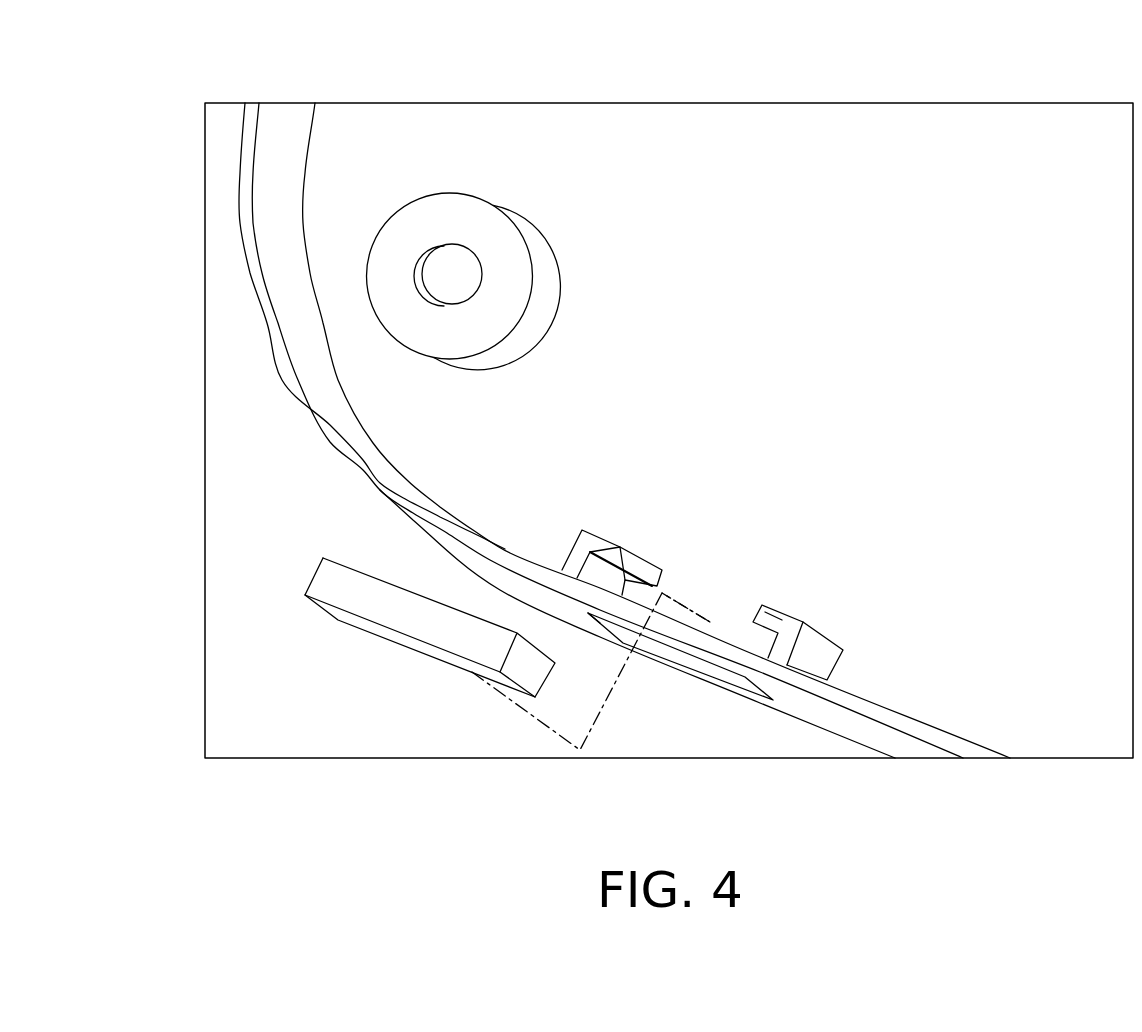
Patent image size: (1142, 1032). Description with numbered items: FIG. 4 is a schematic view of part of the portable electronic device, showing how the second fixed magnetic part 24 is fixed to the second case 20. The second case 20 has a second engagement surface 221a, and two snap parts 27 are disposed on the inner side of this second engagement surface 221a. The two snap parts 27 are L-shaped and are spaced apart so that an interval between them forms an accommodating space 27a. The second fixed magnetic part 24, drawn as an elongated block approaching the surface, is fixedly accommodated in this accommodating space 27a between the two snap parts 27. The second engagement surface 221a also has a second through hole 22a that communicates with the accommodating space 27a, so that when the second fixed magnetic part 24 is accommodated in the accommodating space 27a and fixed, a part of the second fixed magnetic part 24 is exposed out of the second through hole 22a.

The second case 20 is at (286, 123).
The second fixed magnetic part 24 is at (328, 582).
The snap parts 27 is at (582, 537).
The accommodating space 27a is at (692, 618).
The second through hole 22a is at (682, 660).
The second engagement surface 221a is at (815, 715).